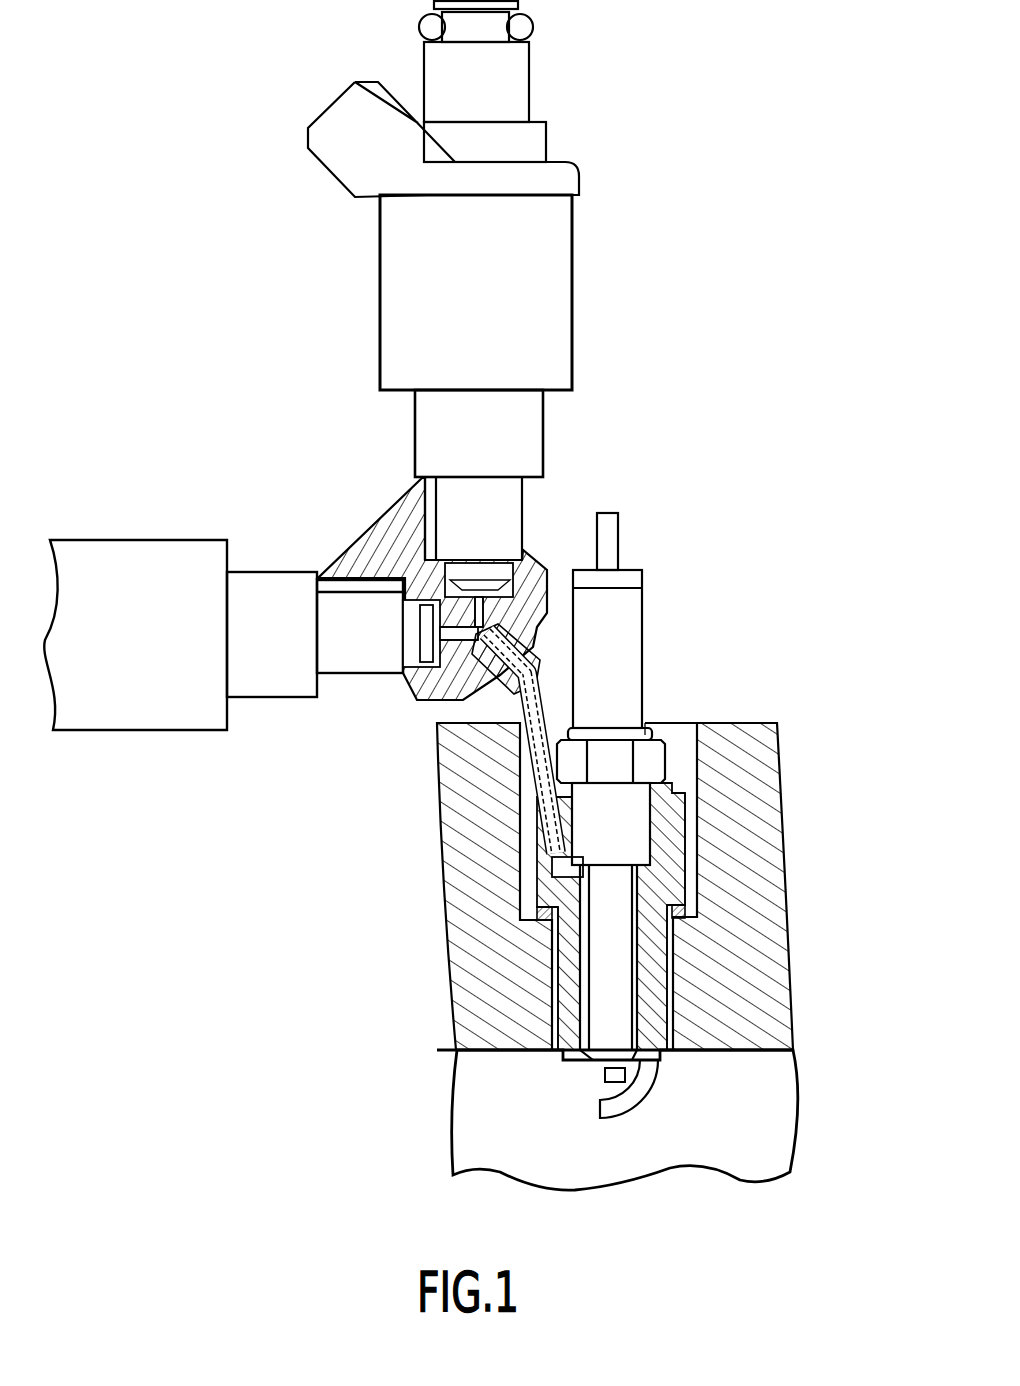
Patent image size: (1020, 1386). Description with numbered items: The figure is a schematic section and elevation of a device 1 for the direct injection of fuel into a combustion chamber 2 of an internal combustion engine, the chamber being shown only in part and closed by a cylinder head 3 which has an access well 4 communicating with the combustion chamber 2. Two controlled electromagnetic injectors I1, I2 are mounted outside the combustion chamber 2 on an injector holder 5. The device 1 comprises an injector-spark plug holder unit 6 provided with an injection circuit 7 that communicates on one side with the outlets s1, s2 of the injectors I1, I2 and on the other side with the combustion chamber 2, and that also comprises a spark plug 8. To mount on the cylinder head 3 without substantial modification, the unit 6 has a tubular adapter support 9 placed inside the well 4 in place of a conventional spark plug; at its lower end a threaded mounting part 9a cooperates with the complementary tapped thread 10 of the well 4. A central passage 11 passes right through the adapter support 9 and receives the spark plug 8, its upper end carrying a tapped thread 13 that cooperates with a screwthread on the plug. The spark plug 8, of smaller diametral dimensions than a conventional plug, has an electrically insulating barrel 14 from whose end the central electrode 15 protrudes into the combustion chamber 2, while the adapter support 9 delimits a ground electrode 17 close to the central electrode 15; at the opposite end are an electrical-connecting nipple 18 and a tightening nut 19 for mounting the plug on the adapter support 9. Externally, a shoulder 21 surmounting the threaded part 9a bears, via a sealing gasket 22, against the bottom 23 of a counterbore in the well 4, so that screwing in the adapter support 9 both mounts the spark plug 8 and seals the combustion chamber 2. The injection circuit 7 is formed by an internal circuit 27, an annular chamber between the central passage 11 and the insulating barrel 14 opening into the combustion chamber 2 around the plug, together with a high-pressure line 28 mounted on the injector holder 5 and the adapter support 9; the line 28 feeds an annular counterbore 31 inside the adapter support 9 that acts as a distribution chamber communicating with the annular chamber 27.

The device 1 is at (662, 408).
The combustion chamber 2 is at (787, 1114).
The cylinder head 3 is at (779, 979).
The access well 4 is at (683, 741).
The injector holder 5 is at (376, 546).
The injector-spark plug holder unit 6 is at (663, 700).
The injection circuit 7 is at (557, 903).
The spark plug 8 is at (657, 598).
The adapter support 9 is at (676, 835).
The threaded mounting part 9a is at (553, 964).
The tapped thread 10 is at (553, 1014).
The central passage 11 is at (644, 1060).
The tapped thread 13 is at (652, 848).
The insulating barrel 14 is at (603, 1050).
The central electrode 15 is at (605, 1080).
The ground electrode 17 is at (646, 1094).
The electrical-connecting nipple 18 is at (608, 536).
The tightening nut 19 is at (614, 755).
The shoulder 21 is at (688, 875).
The sealing gasket 22 is at (690, 908).
The bottom of counterbore 23 is at (760, 950).
The internal circuit 27 is at (710, 998).
The line 28 is at (484, 696).
The annular counterbore 31 is at (544, 880).
The injector I1 is at (558, 275).
The injector I2 is at (153, 717).
The outlet s1 is at (483, 612).
The outlet s2 is at (404, 689).